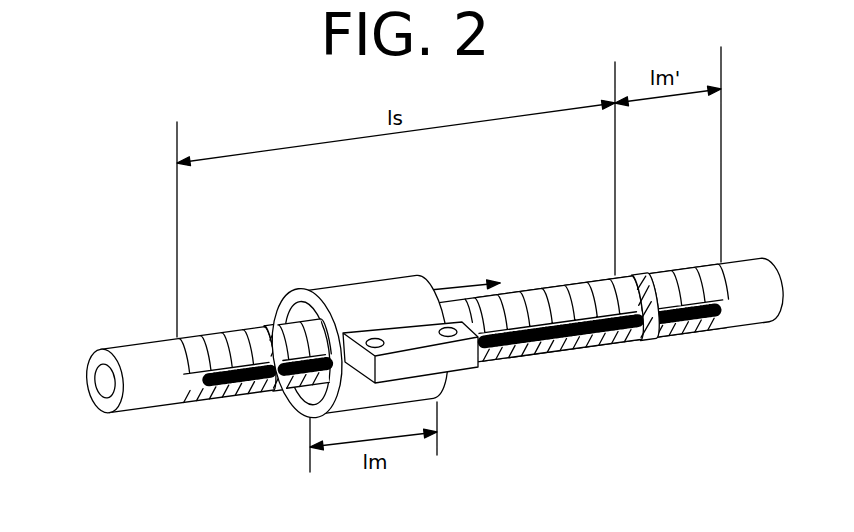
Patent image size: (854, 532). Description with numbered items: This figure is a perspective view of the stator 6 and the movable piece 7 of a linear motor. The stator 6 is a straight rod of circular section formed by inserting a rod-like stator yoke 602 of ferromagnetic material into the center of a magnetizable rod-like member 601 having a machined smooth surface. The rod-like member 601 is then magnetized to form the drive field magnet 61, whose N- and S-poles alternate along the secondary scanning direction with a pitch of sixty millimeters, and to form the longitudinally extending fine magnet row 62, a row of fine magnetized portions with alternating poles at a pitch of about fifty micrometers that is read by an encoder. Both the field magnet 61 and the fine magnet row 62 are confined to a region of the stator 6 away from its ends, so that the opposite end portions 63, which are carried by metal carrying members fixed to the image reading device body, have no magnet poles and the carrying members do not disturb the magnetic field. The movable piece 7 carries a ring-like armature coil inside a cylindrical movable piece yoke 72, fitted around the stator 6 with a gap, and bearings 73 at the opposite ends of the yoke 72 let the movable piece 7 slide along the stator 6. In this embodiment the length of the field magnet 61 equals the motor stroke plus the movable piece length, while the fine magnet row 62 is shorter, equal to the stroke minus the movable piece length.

The stator 6 is at (246, 316).
The rod-like member 601 is at (107, 358).
The stator yoke 602 is at (105, 391).
The field magnet 61 is at (199, 342).
The fine magnet row 62 is at (211, 397).
The end portion 63 is at (143, 357).
The movable piece 7 is at (367, 272).
The movable piece yoke 72 is at (403, 285).
The bearing 73 is at (305, 318).